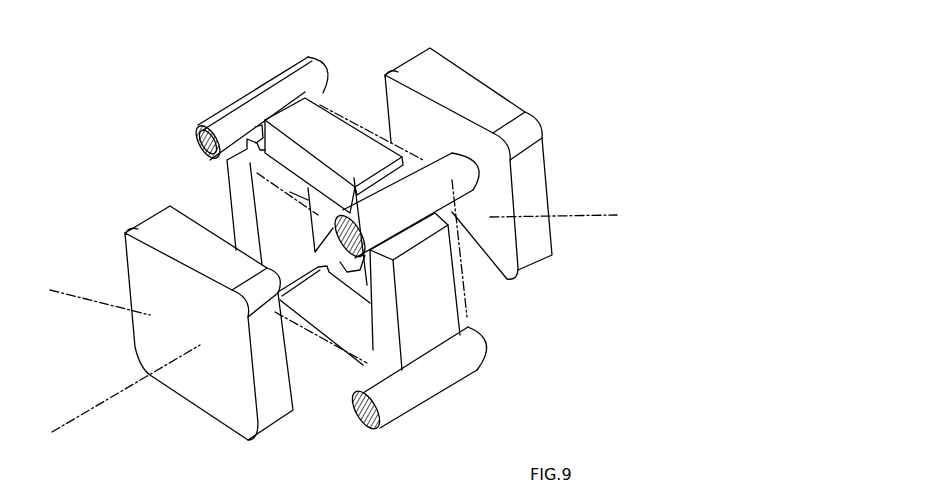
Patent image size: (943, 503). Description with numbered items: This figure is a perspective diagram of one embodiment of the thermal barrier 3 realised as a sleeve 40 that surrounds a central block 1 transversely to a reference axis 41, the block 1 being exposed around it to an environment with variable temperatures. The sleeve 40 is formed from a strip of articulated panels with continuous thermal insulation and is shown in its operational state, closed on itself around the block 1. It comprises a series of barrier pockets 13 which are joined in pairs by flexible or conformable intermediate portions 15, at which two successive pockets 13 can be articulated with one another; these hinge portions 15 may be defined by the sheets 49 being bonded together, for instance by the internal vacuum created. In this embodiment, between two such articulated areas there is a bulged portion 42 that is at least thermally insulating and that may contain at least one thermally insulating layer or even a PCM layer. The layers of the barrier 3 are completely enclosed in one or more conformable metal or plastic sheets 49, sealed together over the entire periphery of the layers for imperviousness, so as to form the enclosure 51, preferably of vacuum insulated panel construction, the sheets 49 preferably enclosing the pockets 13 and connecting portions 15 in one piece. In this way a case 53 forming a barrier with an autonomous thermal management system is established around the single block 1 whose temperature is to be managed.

The central block 1 is at (467, 297).
The thermal barrier 3 is at (266, 44).
The barrier pocket 13 is at (339, 126).
The intermediate portion 15 is at (227, 127).
The sleeve 40 is at (324, 390).
The reference axis 41 is at (60, 420).
The bulged portion 42 is at (470, 363).
The conformable sheet 49 is at (202, 392).
The enclosure 51 is at (333, 255).
The case 53 is at (168, 165).